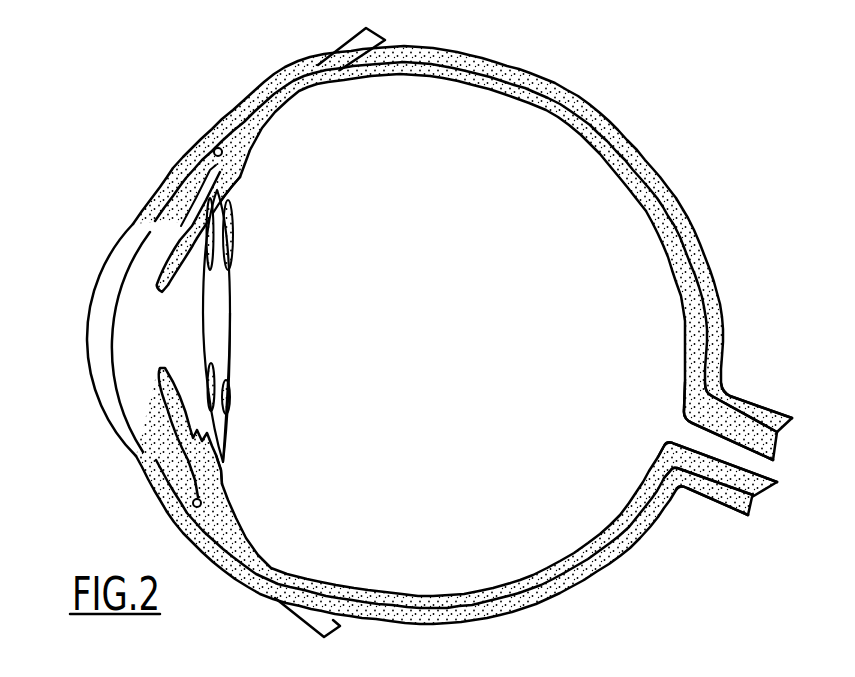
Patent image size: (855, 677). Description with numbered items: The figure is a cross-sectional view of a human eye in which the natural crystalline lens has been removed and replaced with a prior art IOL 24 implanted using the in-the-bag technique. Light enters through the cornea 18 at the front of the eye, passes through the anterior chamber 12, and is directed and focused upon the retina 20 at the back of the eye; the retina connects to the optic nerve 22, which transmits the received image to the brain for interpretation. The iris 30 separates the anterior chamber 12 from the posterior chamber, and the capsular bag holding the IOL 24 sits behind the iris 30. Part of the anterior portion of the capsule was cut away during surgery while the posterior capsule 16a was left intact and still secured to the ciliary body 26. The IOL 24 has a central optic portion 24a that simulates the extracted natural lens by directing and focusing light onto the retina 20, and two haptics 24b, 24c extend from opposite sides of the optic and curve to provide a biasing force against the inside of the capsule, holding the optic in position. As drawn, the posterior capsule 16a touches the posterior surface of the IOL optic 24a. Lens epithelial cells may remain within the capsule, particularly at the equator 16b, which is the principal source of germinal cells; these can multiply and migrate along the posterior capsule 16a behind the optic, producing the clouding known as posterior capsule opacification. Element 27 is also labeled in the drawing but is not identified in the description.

The anterior chamber 12 is at (416, 332).
The posterior capsule 16a is at (229, 322).
The equator of the capsule 16b is at (235, 203).
The cornea 18 is at (88, 343).
The retina 20 is at (680, 407).
The optic nerve 22 is at (757, 392).
The prior art IOL 24 is at (228, 326).
The central optic portion 24a is at (203, 325).
The haptic 24b is at (232, 245).
The haptic 24c is at (231, 385).
The ciliary body 26 is at (238, 181).
The zonules 27 is at (233, 221).
The iris 30 is at (162, 275).